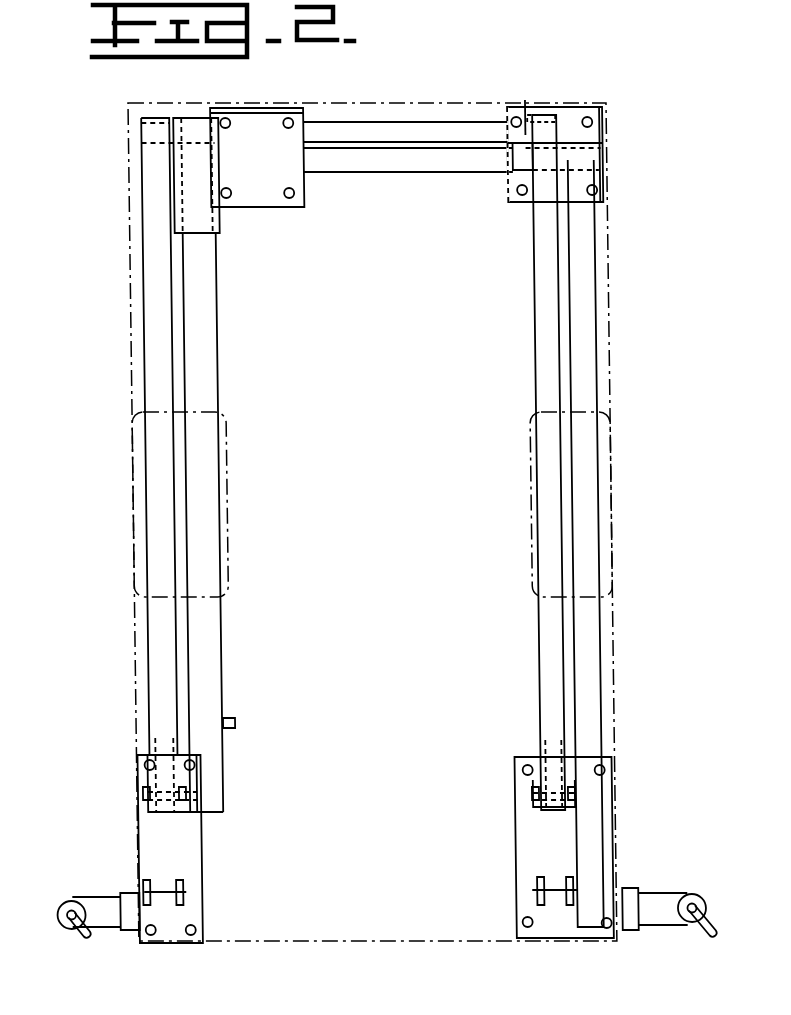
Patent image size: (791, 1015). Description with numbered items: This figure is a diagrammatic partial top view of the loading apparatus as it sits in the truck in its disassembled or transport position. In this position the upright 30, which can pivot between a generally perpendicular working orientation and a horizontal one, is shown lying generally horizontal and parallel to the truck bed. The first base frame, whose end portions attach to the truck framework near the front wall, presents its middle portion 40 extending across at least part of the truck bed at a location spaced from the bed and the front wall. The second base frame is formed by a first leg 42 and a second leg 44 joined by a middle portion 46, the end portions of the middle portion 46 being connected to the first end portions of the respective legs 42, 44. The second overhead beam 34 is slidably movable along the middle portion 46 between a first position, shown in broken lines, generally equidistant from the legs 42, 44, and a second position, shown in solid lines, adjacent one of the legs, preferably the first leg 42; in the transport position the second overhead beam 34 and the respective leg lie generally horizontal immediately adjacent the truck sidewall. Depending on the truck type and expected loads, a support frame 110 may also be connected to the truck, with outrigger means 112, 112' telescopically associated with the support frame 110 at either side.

The upright 30 is at (565, 339).
The second overhead beam 34 is at (216, 681).
The middle portion 40 is at (386, 172).
The first leg 42 is at (170, 647).
The second leg 44 is at (532, 664).
The middle portion 46 is at (393, 122).
The support frame 110 is at (120, 880).
The outrigger means 112 is at (68, 894).
The outrigger means 112' is at (692, 882).